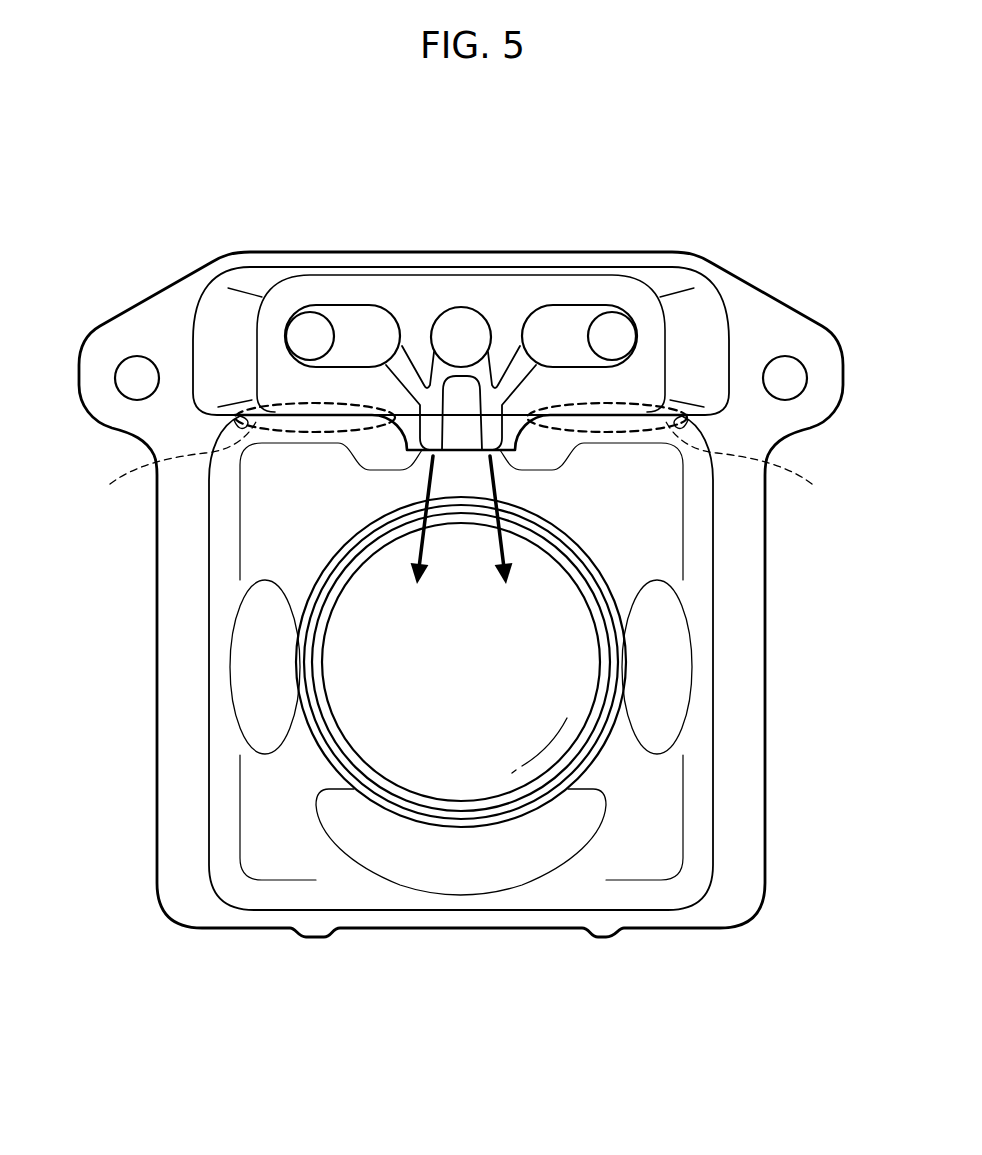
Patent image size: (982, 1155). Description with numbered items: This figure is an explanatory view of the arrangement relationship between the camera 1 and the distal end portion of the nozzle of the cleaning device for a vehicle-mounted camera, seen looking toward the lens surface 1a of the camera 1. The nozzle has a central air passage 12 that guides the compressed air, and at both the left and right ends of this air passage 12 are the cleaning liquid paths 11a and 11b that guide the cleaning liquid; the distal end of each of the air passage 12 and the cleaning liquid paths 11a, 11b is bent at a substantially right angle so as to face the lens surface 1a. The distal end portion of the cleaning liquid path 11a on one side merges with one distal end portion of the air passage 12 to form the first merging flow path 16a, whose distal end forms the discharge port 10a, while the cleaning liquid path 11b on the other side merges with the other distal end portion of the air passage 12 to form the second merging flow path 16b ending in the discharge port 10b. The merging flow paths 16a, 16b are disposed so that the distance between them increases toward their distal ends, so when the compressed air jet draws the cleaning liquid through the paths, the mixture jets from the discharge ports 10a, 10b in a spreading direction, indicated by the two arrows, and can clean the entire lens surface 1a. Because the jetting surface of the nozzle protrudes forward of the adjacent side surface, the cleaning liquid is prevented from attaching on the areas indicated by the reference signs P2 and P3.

The camera 1 is at (660, 823).
The lens surface 1a is at (578, 700).
The discharge port 10a is at (357, 470).
The discharge port 10b is at (567, 470).
The cleaning liquid path 11a is at (303, 318).
The cleaning liquid path 11b is at (608, 318).
The air passage 12 is at (458, 315).
The merging flow path 16a is at (425, 427).
The merging flow path 16b is at (497, 427).
The area P2 is at (163, 467).
The area P3 is at (758, 467).